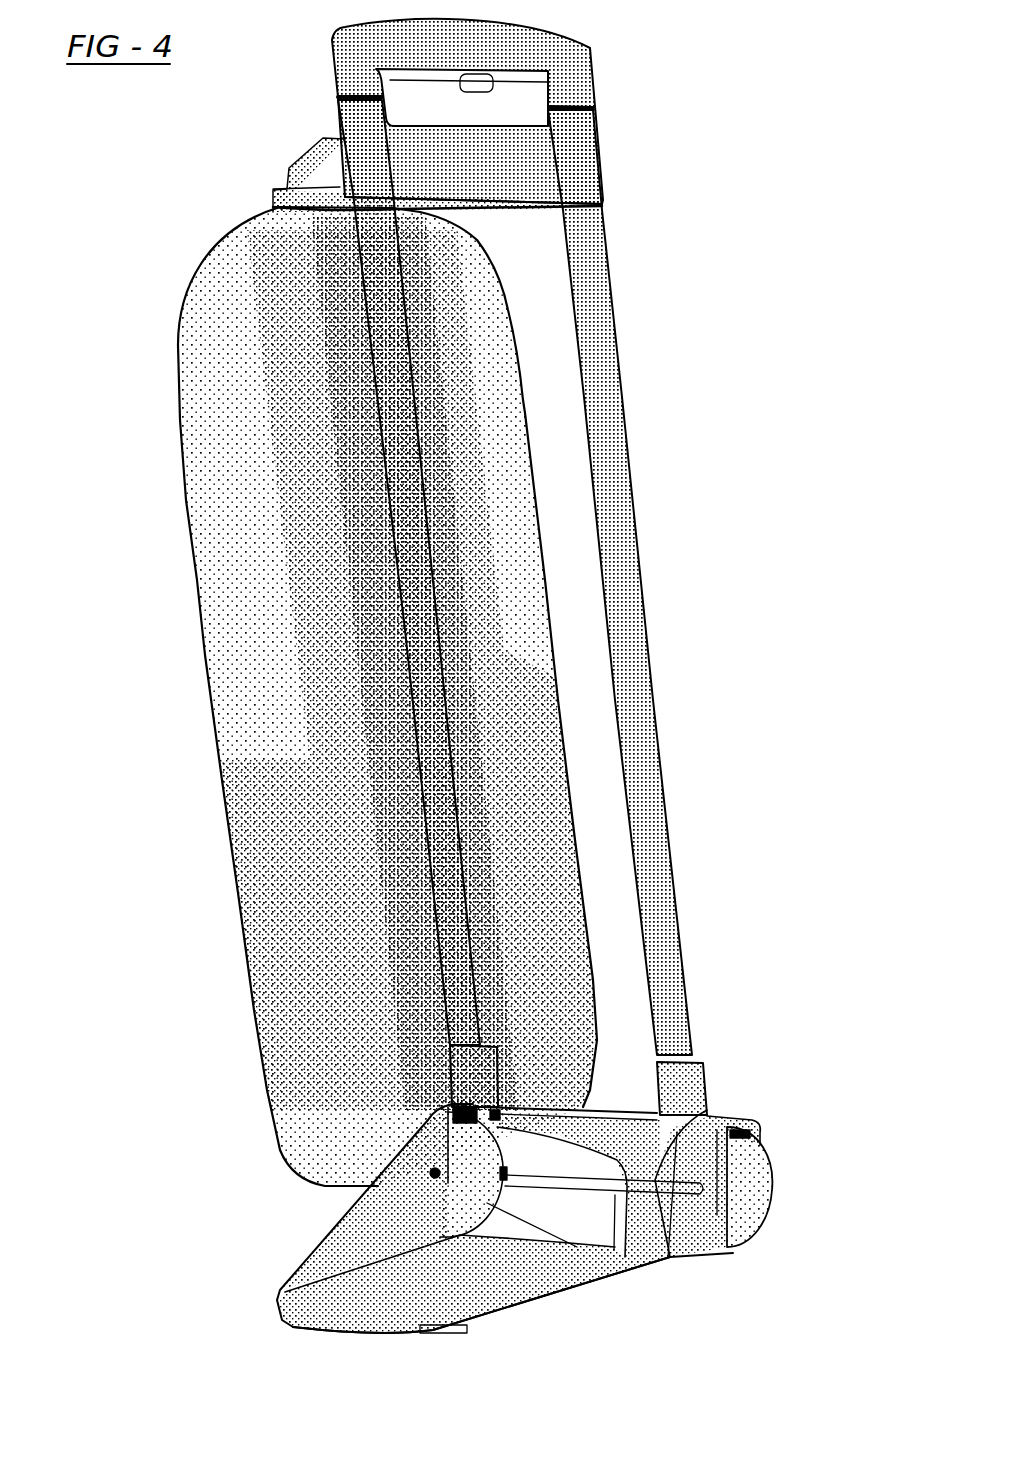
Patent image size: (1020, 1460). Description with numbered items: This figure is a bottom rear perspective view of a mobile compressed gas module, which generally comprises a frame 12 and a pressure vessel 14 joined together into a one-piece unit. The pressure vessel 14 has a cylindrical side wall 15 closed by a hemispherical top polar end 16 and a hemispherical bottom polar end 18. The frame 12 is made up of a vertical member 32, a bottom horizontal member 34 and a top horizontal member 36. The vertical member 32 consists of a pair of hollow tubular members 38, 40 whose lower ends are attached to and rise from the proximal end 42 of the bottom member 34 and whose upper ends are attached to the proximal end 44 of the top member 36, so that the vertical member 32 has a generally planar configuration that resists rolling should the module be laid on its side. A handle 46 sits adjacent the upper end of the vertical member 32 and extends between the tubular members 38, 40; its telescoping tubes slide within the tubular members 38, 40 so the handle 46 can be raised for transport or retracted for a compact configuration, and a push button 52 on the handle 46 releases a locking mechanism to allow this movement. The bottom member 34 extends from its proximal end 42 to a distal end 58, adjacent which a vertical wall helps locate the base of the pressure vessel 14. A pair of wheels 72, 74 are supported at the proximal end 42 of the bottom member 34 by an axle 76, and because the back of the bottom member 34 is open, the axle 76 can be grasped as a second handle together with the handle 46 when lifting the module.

The frame 12 is at (603, 157).
The pressure vessel 14 is at (209, 678).
The cylindrical side wall 15 is at (209, 500).
The top polar end 16 is at (212, 242).
The bottom polar end 18 is at (317, 1153).
The vertical member 32 is at (630, 431).
The bottom horizontal member 34 is at (340, 1213).
The top horizontal member 36 is at (311, 171).
The tubular member 38 is at (423, 633).
The tubular member 40 is at (625, 568).
The proximal end of the bottom member 42 is at (604, 1110).
The proximal end of the top member 44 is at (503, 185).
The handle 46 is at (540, 38).
The push button 52 is at (468, 86).
The distal end of the bottom member 58 is at (282, 1292).
The wheel 72 is at (577, 1247).
The wheel 74 is at (765, 1187).
The axle 76 is at (710, 1113).